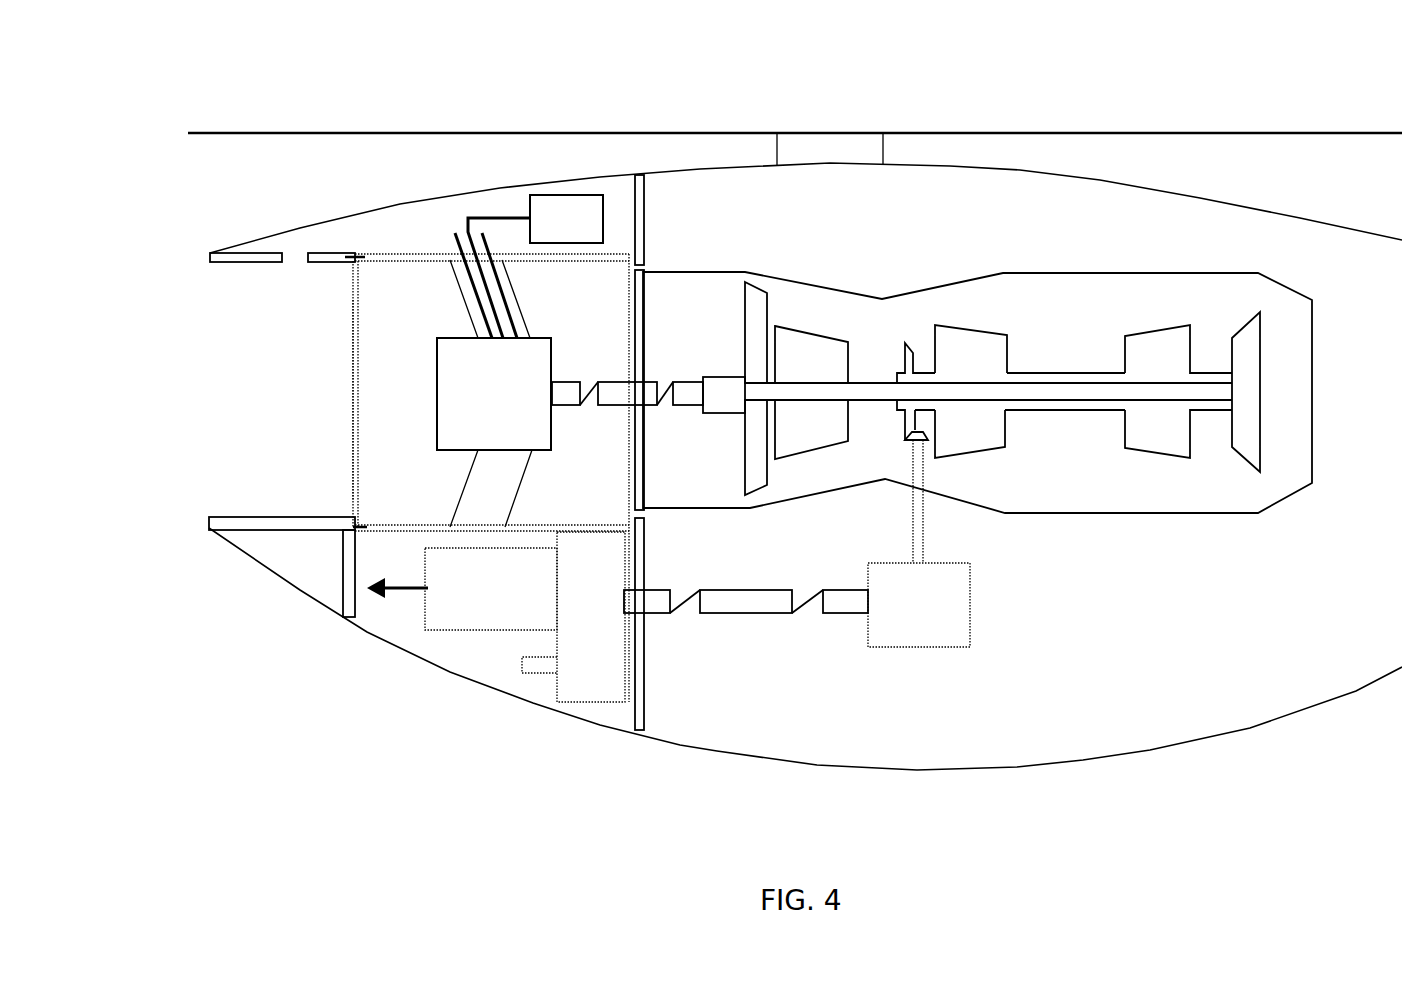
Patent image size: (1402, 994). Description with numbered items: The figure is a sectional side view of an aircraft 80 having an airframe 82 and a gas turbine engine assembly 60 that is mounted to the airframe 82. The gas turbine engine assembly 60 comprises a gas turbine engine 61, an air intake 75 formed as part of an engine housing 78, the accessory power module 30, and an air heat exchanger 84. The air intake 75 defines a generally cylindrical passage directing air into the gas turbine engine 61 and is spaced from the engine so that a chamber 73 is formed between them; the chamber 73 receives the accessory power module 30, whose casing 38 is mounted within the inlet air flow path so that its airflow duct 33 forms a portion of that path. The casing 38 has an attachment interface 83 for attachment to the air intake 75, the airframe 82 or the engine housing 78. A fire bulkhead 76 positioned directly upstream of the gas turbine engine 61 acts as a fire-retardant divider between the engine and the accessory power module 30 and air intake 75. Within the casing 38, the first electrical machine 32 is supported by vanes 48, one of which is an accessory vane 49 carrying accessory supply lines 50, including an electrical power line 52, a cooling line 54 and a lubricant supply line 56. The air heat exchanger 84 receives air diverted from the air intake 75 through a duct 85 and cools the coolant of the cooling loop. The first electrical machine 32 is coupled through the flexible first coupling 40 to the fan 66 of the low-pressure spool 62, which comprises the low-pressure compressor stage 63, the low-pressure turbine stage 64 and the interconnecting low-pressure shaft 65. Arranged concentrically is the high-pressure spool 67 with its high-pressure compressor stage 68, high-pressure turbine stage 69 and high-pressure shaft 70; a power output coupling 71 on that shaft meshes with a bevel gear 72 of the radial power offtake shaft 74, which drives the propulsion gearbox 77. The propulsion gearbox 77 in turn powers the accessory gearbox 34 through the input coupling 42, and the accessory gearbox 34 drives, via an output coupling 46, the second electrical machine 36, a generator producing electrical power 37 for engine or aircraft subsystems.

The aircraft 80 is at (110, 107).
The airframe 82 is at (806, 102).
The chamber 73 is at (383, 225).
The engine housing 78 is at (712, 752).
The air intake 75 is at (242, 264).
The duct 85 is at (295, 252).
The accessory power module 30 is at (350, 360).
The casing 38 is at (355, 437).
The airflow duct 33 is at (391, 480).
The attachment interface 83 is at (343, 533).
The electrical power 37 is at (405, 596).
The second electrical machine 36 is at (478, 600).
The accessory gearbox 34 is at (576, 627).
The output coupling 46 is at (517, 672).
The fire bulkhead 76 is at (633, 708).
The first electrical machine 32 is at (476, 407).
The air heat exchanger 84 is at (554, 230).
The first electrical cable 52 is at (455, 232).
The cooling line 54 is at (476, 214).
The lubricant supply line 56 is at (486, 230).
The accessory supply lines 50 is at (530, 152).
The accessory vane 49 is at (458, 292).
The vanes 48 is at (522, 486).
The first coupling 40 is at (652, 380).
The low-pressure spool 62 is at (723, 395).
The fan 66 is at (755, 330).
The low-pressure compressor stage 63 is at (810, 434).
The low-pressure shaft 65 is at (1205, 395).
The power output coupling 71 is at (903, 360).
The bevel gear 72 is at (905, 436).
The high-pressure compressor stage 68 is at (963, 353).
The high-pressure shaft 70 is at (1072, 377).
The high-pressure spool 67 is at (1083, 413).
The high-pressure turbine stage 69 is at (1167, 355).
The low-pressure turbine stage 64 is at (1250, 375).
The gas turbine engine 61 is at (1190, 517).
The gas turbine engine assembly 60 is at (895, 268).
The power offtake shaft 74 is at (925, 515).
The propulsion gearbox 77 is at (904, 615).
The input coupling 42 is at (735, 615).